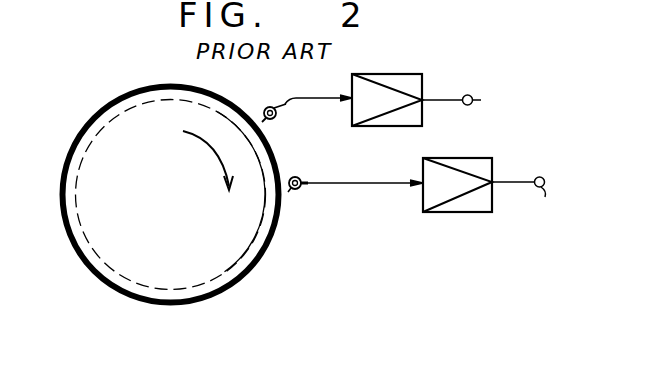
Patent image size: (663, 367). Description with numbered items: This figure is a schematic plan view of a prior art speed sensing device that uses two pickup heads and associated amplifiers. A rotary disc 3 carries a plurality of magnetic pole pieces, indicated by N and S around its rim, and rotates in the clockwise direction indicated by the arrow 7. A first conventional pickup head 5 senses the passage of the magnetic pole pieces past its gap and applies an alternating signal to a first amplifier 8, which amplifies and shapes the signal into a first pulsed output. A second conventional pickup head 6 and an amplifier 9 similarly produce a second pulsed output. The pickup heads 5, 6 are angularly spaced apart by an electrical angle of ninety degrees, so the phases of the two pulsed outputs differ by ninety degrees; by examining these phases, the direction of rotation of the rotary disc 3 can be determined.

The rotary disc 3 is at (112, 242).
The first pickup head 5 is at (280, 120).
The second pickup head 6 is at (299, 190).
The arrow 7 is at (211, 148).
The first amplifier 8 is at (401, 126).
The amplifier 9 is at (446, 212).